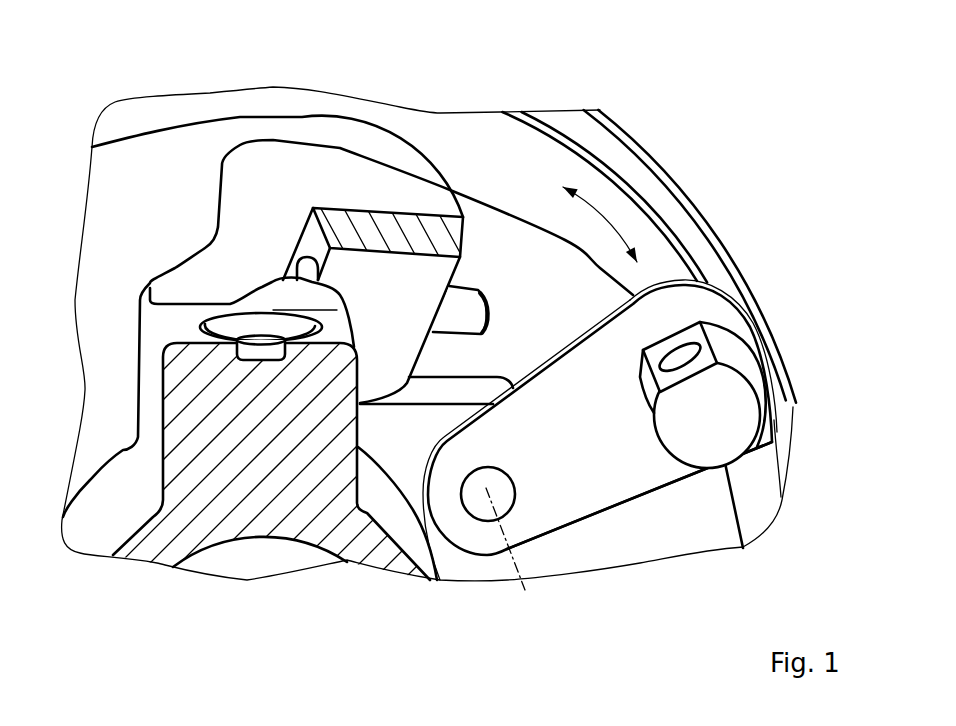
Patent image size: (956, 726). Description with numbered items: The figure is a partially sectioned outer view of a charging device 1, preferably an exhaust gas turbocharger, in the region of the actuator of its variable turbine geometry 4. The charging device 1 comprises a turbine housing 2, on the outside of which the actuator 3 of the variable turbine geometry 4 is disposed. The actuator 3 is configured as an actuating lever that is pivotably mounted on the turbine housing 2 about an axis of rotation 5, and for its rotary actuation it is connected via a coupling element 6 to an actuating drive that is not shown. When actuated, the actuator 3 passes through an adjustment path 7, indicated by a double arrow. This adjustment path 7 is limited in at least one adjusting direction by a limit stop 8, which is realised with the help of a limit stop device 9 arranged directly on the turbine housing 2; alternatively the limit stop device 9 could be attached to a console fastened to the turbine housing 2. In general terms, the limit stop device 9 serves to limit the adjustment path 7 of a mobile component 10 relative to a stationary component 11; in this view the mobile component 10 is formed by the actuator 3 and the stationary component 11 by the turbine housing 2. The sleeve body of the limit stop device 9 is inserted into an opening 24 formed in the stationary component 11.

The charging device 1 is at (767, 160).
The turbine housing 2 is at (652, 146).
The actuator 3 is at (613, 487).
The variable turbine geometry 4 is at (762, 332).
The axis of rotation 5 is at (507, 560).
The coupling element 6 is at (732, 420).
The adjustment path 7 is at (607, 217).
The limit stop 8 is at (492, 314).
The limit stop device 9 is at (470, 282).
The mobile component 10 is at (587, 456).
The stationary component 11 is at (250, 517).
The opening 24 is at (302, 272).